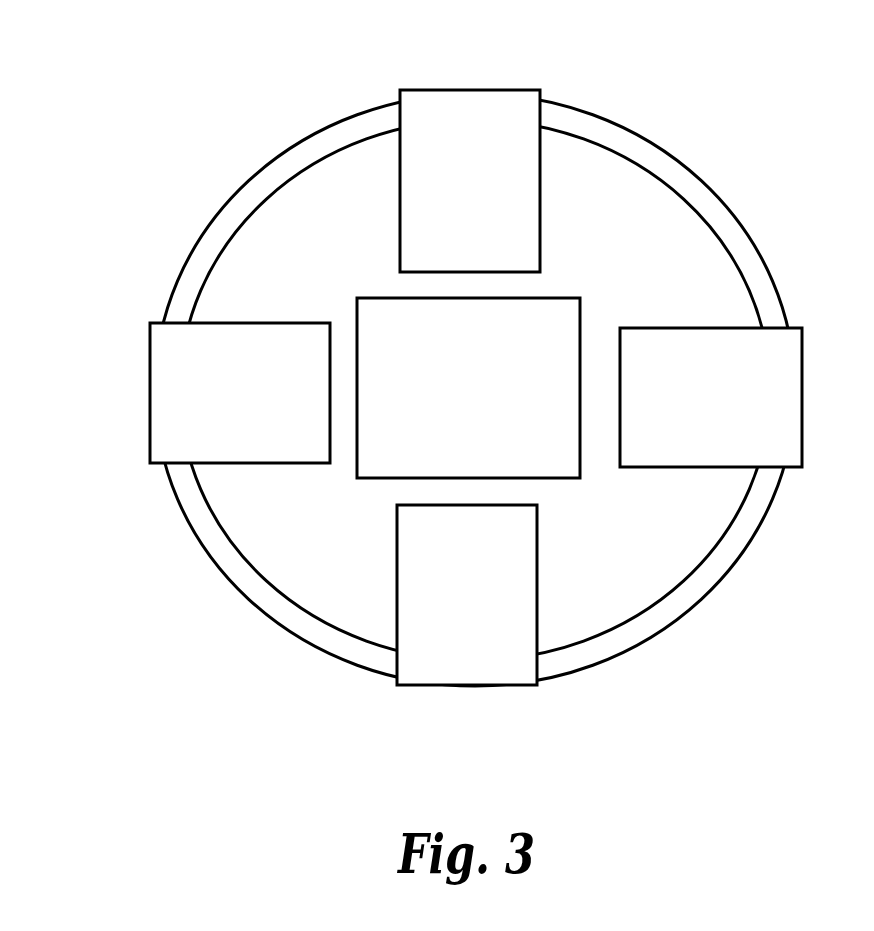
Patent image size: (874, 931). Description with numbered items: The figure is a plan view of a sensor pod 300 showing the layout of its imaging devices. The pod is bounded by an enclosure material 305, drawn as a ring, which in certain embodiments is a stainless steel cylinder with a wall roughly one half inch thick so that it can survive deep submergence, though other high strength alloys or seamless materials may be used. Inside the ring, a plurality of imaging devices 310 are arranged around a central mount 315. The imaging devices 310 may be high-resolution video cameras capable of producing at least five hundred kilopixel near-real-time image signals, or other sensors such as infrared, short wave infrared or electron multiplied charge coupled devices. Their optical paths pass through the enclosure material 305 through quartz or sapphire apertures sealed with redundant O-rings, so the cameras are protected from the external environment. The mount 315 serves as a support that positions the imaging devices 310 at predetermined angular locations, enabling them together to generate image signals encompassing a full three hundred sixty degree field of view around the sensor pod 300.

The sensor pod 300 is at (103, 91).
The enclosure material 305 is at (705, 178).
The imaging devices 310 is at (476, 387).
The mount 315 is at (468, 388).